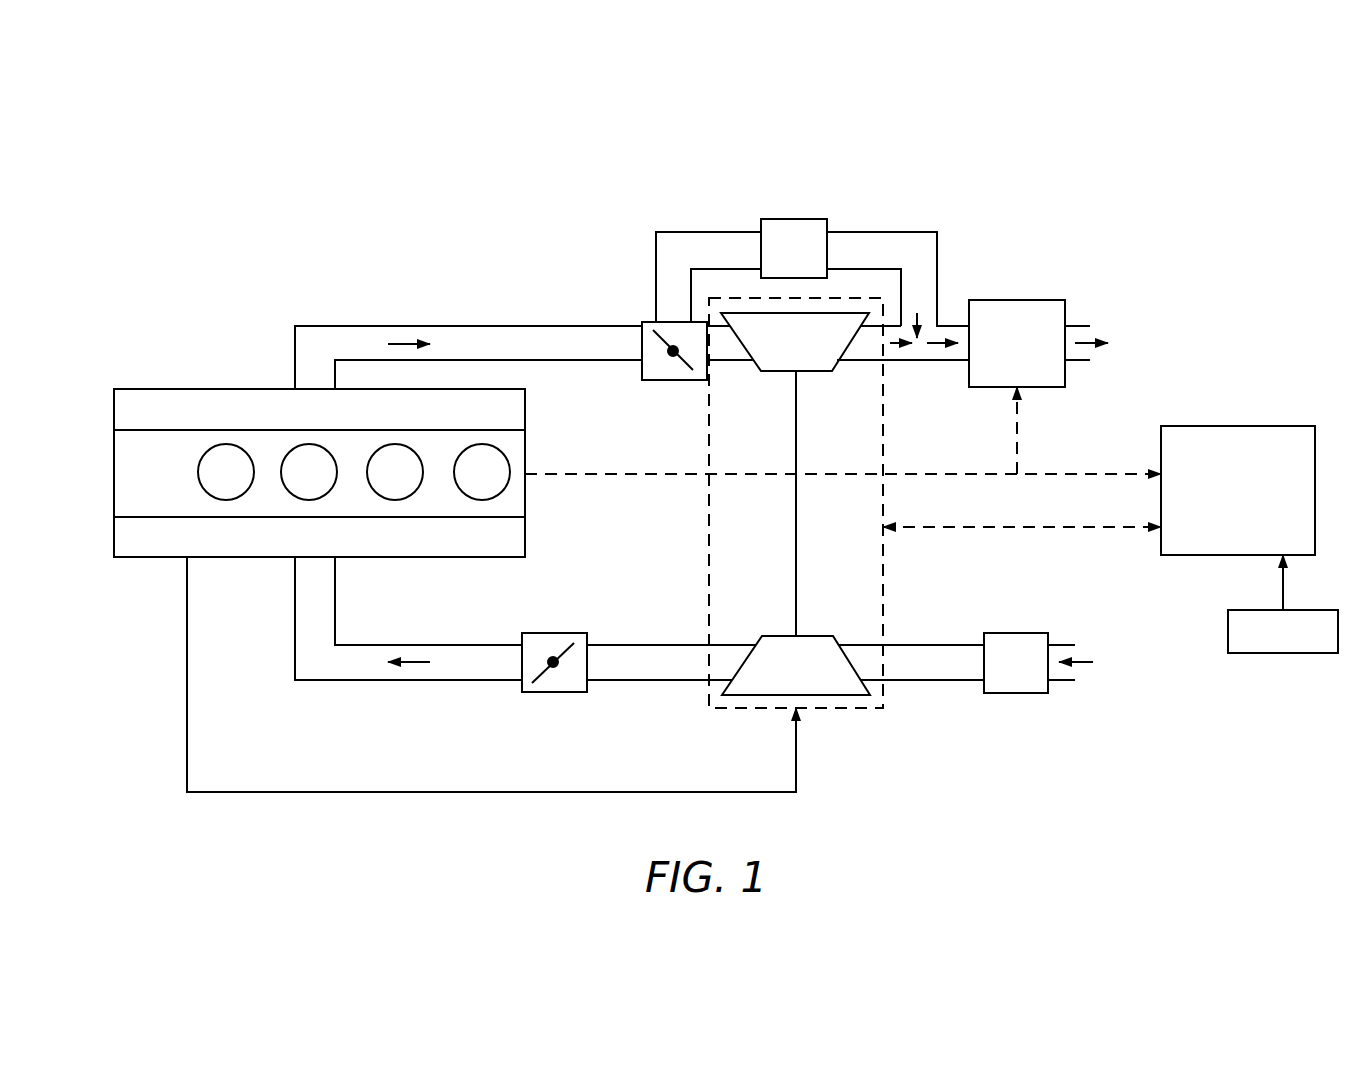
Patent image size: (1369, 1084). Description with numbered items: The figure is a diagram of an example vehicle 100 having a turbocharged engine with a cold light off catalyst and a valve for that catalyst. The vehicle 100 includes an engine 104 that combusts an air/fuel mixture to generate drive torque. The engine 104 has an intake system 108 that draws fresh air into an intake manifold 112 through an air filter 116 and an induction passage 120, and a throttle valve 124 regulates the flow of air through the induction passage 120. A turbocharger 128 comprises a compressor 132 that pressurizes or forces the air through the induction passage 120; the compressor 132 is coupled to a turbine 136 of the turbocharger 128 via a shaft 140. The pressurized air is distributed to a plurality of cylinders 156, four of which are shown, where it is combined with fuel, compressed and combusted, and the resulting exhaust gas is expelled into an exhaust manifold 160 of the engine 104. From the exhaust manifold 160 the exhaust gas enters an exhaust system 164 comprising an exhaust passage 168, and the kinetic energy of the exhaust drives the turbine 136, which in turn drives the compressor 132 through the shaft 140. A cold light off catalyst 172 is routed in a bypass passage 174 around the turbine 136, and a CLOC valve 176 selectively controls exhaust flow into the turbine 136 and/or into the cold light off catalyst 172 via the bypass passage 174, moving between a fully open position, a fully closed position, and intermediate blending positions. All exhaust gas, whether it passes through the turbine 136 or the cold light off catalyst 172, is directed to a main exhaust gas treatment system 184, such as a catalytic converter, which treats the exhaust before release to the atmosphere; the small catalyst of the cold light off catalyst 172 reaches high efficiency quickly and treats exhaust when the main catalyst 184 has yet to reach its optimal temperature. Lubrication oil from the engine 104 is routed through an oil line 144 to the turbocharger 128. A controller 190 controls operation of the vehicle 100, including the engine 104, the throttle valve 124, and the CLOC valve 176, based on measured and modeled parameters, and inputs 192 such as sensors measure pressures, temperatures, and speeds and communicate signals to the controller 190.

The vehicle 100 is at (372, 150).
The engine 104 is at (334, 467).
The intake system 108 is at (333, 698).
The intake manifold 112 is at (114, 535).
The air filter 116 is at (1027, 693).
The induction passage 120 is at (458, 681).
The throttle valve 124 is at (578, 633).
The turbocharger 128 is at (762, 503).
The compressor 132 is at (777, 636).
The turbine 136 is at (776, 371).
The shaft 140 is at (796, 450).
The oil line 144 is at (348, 791).
The cylinders 156 is at (505, 458).
The exhaust manifold 160 is at (114, 400).
The exhaust system 164 is at (583, 230).
The exhaust passage 168 is at (440, 326).
The cold light off catalyst 172 is at (826, 220).
The bypass passage 174 is at (716, 232).
The CLOC valve 176 is at (642, 323).
The main exhaust gas treatment system 184 is at (1065, 300).
The controller 190 is at (1265, 426).
The inputs 192 is at (1262, 653).